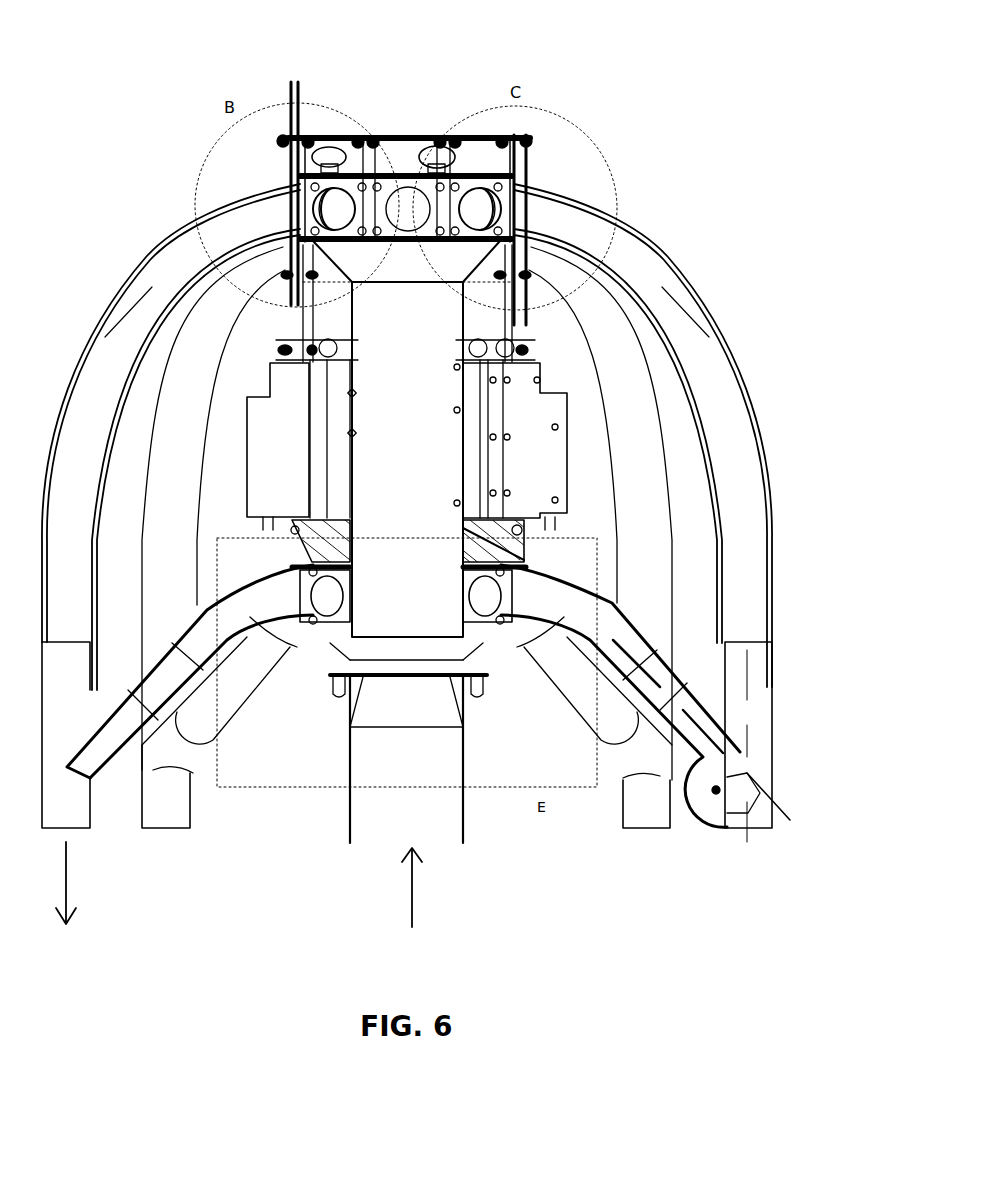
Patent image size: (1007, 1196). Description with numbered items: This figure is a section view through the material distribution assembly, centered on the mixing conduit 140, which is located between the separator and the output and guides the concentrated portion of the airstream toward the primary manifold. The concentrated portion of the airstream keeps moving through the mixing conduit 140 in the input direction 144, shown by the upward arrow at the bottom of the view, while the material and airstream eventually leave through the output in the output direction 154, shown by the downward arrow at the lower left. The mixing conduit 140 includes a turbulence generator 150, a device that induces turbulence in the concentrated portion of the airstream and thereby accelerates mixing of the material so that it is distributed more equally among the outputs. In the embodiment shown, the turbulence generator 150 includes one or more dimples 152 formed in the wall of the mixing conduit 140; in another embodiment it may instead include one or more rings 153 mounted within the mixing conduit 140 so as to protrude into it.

The mixing conduit 140 is at (520, 553).
The input direction 144 is at (413, 905).
The turbulence generator 150 is at (386, 300).
The dimples 152 is at (525, 190).
The rings 153 is at (381, 532).
The output direction 154 is at (67, 880).